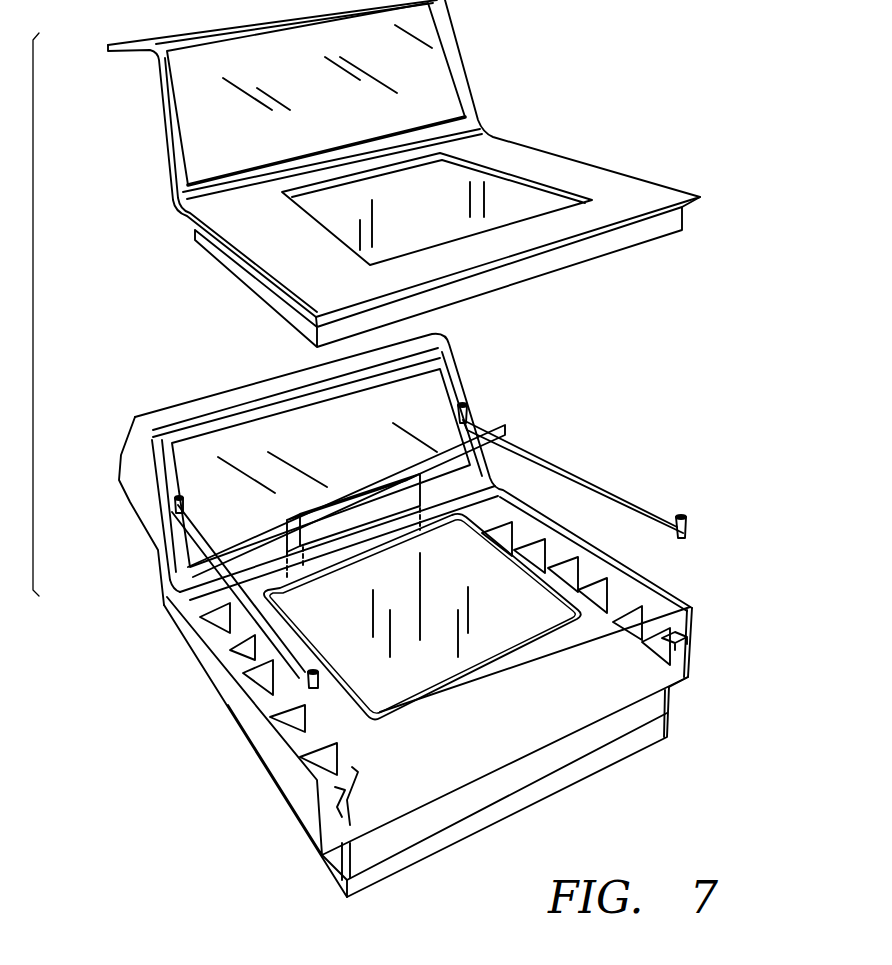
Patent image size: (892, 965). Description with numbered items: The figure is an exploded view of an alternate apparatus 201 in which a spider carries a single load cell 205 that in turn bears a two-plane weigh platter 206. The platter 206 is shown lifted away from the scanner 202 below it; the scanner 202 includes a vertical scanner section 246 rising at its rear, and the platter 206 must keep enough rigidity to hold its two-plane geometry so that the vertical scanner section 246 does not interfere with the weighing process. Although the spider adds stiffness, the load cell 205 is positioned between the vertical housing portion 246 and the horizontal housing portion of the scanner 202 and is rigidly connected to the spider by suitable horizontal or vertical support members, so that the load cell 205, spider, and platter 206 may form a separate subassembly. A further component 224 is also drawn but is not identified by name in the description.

The alternate apparatus 201 is at (677, 332).
The scanner 202 is at (200, 667).
The load cell 205 is at (366, 514).
The two-plane weigh platter 206 is at (572, 155).
The side wall 224 is at (300, 793).
The vertical scanner section 246 is at (143, 500).